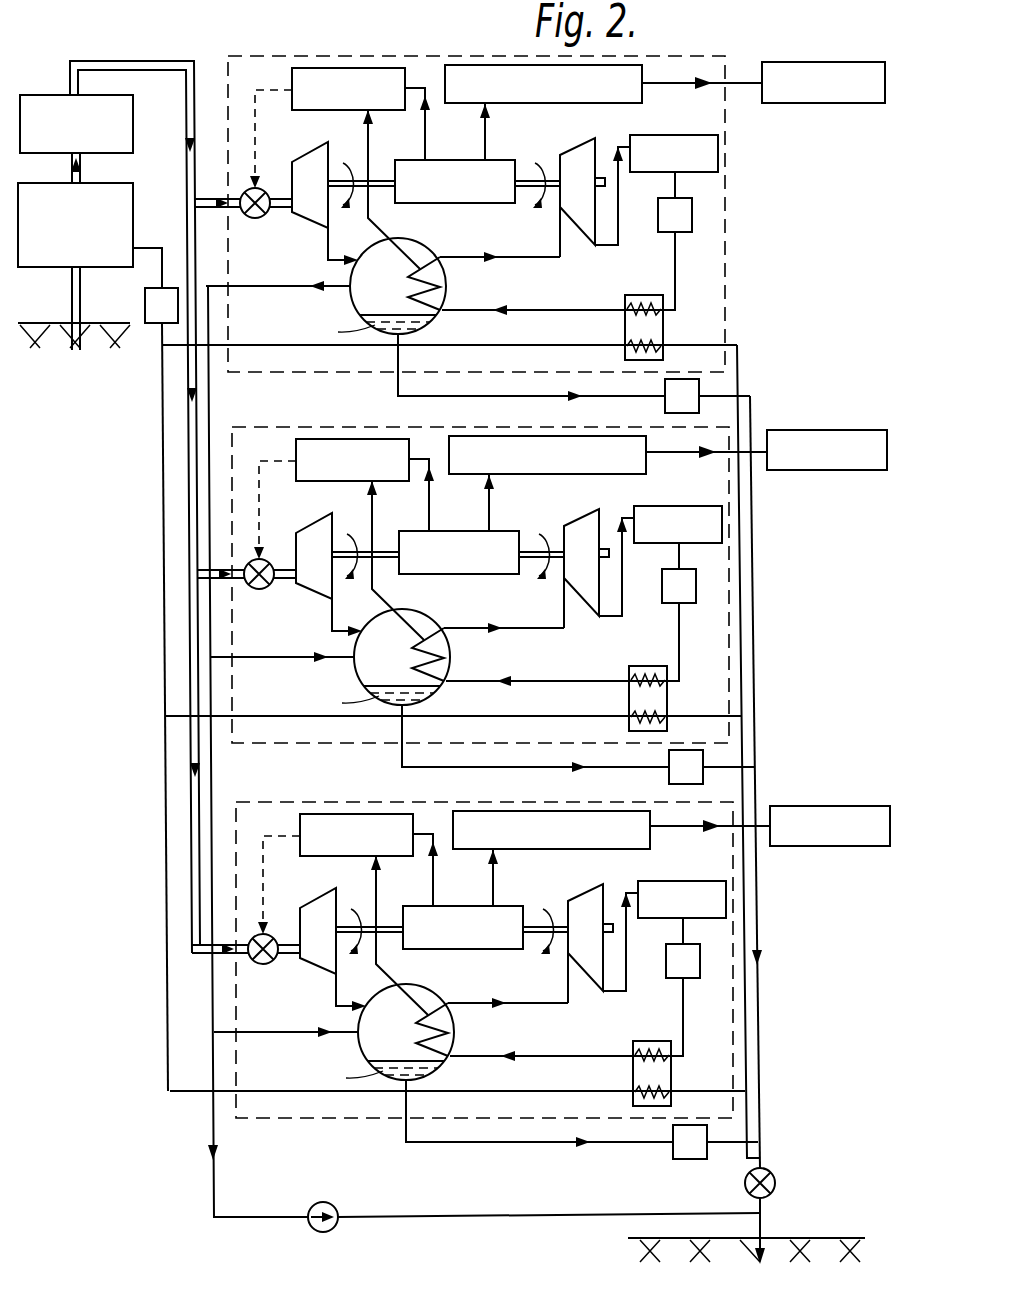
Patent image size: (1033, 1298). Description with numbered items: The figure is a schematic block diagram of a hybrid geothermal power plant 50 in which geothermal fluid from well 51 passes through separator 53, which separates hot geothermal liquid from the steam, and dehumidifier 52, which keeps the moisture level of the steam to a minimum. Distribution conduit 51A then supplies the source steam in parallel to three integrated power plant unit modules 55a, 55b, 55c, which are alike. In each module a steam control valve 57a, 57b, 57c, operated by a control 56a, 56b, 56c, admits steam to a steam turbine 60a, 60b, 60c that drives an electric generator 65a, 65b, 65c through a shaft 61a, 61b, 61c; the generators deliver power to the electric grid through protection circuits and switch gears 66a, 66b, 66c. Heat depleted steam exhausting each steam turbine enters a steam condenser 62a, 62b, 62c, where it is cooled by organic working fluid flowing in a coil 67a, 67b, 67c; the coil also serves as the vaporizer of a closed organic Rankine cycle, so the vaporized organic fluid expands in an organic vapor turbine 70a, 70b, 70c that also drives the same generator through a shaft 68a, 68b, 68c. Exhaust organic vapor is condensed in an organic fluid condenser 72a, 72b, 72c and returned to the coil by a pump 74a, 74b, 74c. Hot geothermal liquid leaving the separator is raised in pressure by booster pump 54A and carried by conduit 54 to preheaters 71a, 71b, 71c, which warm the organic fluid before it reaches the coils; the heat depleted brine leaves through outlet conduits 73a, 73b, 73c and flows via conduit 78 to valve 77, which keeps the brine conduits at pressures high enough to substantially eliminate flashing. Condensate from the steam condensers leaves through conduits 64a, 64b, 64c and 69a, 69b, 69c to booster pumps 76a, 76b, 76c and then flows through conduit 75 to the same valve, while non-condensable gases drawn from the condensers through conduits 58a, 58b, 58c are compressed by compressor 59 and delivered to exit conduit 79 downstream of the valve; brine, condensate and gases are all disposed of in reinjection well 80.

The power plant 50 is at (352, 45).
The well 51 is at (82, 313).
The distribution conduit 51A is at (186, 134).
The dehumidifier 52 is at (120, 96).
The separator 53 is at (133, 188).
The conduit 54 is at (164, 462).
The booster pump 54A is at (167, 262).
The power plant unit module 55a is at (280, 56).
The power plant unit module 55b is at (460, 593).
The power plant unit module 55c is at (464, 968).
The control 56a is at (291, 78).
The control unit 56b is at (330, 536).
The control unit 56c is at (334, 911).
The steam control valve 57a is at (266, 219).
The steam control valve 57b is at (266, 591).
The steam control valve 57c is at (270, 966).
The water outlet line 58a is at (268, 288).
The water outlet line 58b is at (269, 670).
The water outlet line 58c is at (273, 1045).
The compressor 59 is at (336, 1208).
The steam turbine 60a is at (309, 146).
The steam turbine 60b is at (315, 563).
The steam turbine 60c is at (319, 938).
The shaft 61a is at (338, 165).
The shaft 61b is at (365, 535).
The shaft 61c is at (369, 910).
The steam condenser 62a is at (351, 278).
The steam condenser 62b is at (317, 642).
The steam condenser 62c is at (321, 1017).
The heat exchanger outlet line 64a is at (397, 357).
The heat exchanger outlet line 64b is at (426, 736).
The heat exchanger outlet line 64c is at (430, 1111).
The electric generator 65a is at (452, 158).
The electric generator 65b is at (459, 532).
The electric generator 65c is at (463, 907).
The electrical protection and switch gear 66a is at (493, 107).
The electrical protection and switch gear 66b is at (527, 483).
The electrical protection and switch gear 66c is at (531, 858).
The coil 67a is at (450, 237).
The coil 67b is at (411, 645).
The coil 67c is at (415, 1020).
The shaft 68a is at (545, 206).
The organic turbine shaft 68b is at (539, 571).
The organic turbine shaft 68c is at (543, 946).
The pump inlet line 69a is at (543, 347).
The pump inlet line 69b is at (586, 745).
The pump inlet line 69c is at (590, 1120).
The organic vapor turbine 70a is at (570, 149).
The organic vapor turbine 70b is at (597, 558).
The organic vapor turbine 70c is at (601, 933).
The preheater 71a is at (641, 294).
The preheater 71b is at (648, 675).
The preheater 71c is at (652, 1050).
The organic fluid condenser 72a is at (676, 134).
The organic fluid condenser 72b is at (678, 506).
The organic fluid condenser 72c is at (682, 881).
The preheater brine outlet line 73a is at (698, 344).
The preheater brine outlet line 73b is at (453, 697).
The preheater brine outlet line 73c is at (457, 1072).
The pump 74a is at (692, 233).
The pump 74b is at (694, 612).
The pump 74c is at (698, 987).
The conduit 75 is at (759, 928).
The booster pump 76a is at (664, 387).
The booster pump 76b is at (679, 762).
The booster pump 76c is at (683, 1137).
The valve 77 is at (764, 1169).
The conduit 78 is at (747, 1010).
The exit conduit 79 is at (763, 1223).
The reinjection well 80 is at (766, 1254).